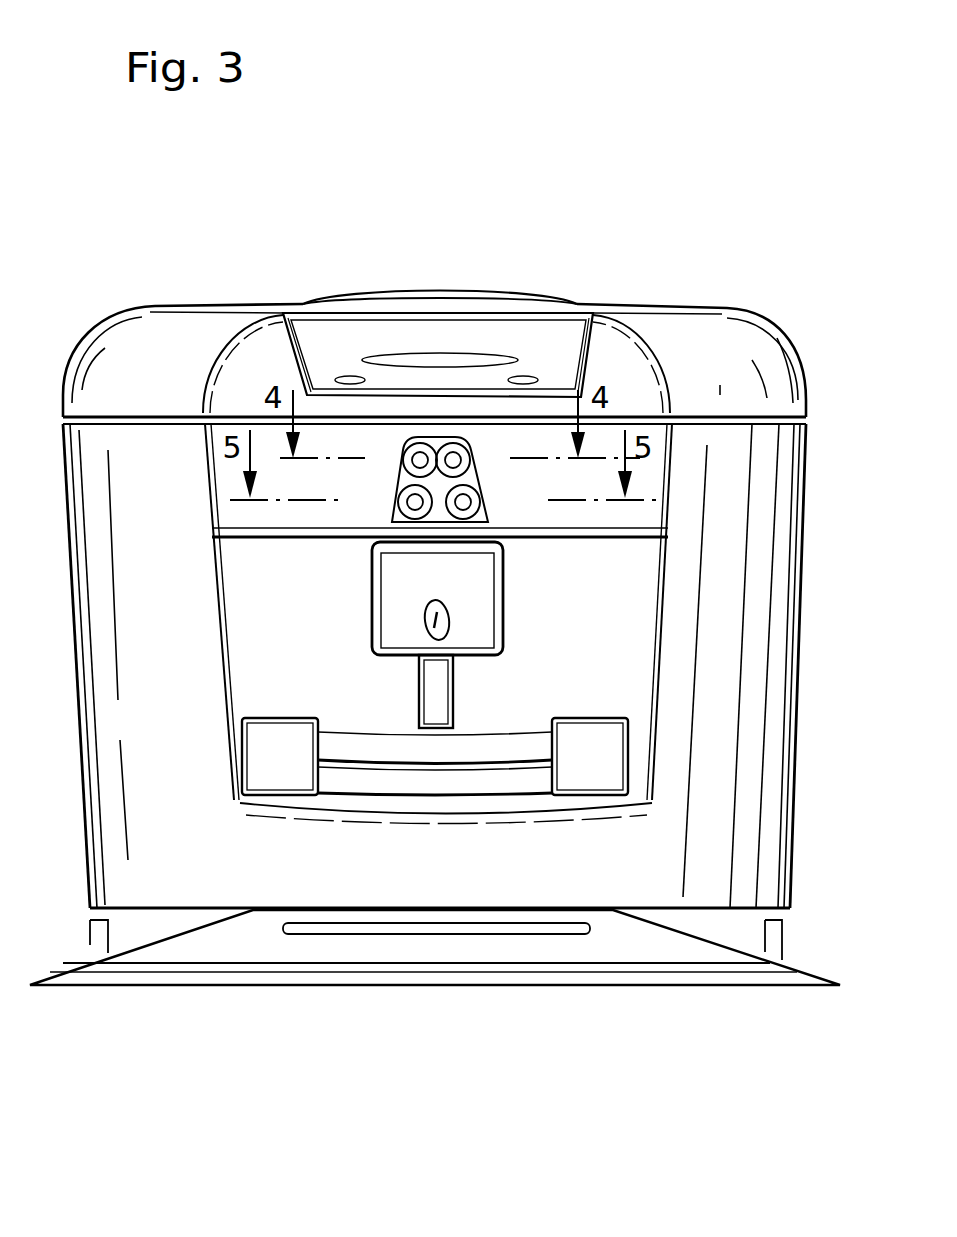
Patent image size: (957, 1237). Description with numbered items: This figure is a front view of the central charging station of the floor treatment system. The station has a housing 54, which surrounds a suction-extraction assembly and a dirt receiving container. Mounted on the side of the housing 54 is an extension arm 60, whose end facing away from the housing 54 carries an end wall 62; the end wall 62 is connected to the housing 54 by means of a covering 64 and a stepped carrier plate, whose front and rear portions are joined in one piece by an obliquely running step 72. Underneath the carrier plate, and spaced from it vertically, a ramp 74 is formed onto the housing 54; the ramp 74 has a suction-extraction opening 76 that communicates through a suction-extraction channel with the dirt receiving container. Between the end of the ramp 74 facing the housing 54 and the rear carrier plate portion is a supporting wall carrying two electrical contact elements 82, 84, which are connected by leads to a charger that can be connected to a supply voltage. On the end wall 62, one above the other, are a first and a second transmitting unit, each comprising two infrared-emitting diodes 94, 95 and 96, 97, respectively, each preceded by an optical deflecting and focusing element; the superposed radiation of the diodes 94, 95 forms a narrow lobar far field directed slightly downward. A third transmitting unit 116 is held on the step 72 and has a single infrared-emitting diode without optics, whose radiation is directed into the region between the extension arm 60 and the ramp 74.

The housing 54 is at (795, 668).
The extension arm 60 is at (682, 458).
The end wall 62 is at (645, 517).
The covering 64 is at (497, 345).
The step 72 is at (483, 590).
The ramp 74 is at (630, 945).
The suction-extraction opening 76 is at (352, 935).
The electrical contact element 82 is at (392, 748).
The electrical contact element 84 is at (423, 783).
The infrared-emitting diode 94 is at (413, 458).
The infrared-emitting diode 95 is at (456, 458).
The infrared-emitting diode 96 is at (415, 502).
The infrared-emitting diode 97 is at (463, 502).
The third transmitting unit 116 is at (430, 628).